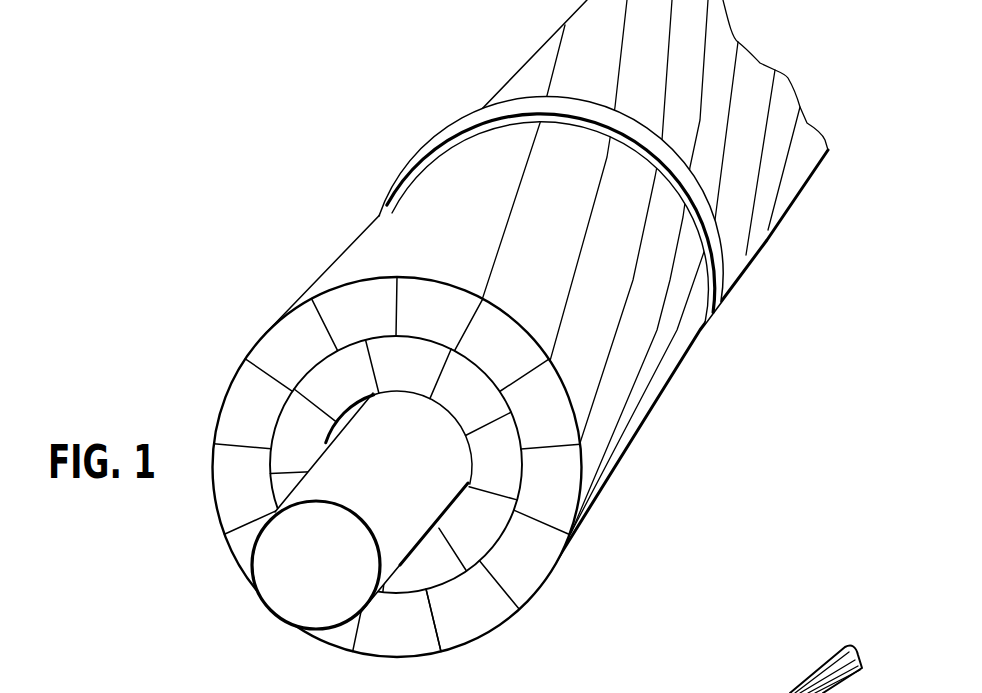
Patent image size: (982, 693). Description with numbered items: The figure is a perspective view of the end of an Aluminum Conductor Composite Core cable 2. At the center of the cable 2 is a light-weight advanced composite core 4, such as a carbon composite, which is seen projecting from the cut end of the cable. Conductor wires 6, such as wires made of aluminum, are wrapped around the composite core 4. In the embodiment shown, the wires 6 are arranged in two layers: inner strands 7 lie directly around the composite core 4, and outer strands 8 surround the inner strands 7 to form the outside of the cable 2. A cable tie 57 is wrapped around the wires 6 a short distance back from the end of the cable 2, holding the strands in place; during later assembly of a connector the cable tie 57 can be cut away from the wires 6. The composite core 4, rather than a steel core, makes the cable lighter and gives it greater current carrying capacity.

The ACCC cable 2 is at (643, 400).
The composite core 4 is at (270, 617).
The conductor wires 6 is at (493, 619).
The inner strands 7 is at (288, 427).
The outer strands 8 is at (283, 333).
The cable tie 57 is at (460, 124).